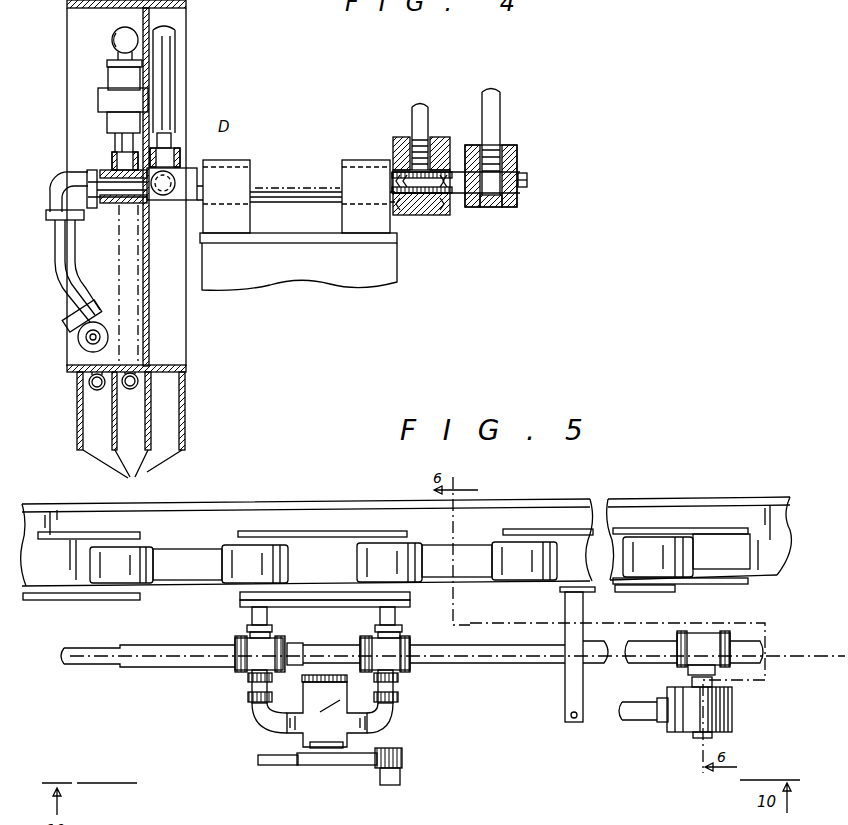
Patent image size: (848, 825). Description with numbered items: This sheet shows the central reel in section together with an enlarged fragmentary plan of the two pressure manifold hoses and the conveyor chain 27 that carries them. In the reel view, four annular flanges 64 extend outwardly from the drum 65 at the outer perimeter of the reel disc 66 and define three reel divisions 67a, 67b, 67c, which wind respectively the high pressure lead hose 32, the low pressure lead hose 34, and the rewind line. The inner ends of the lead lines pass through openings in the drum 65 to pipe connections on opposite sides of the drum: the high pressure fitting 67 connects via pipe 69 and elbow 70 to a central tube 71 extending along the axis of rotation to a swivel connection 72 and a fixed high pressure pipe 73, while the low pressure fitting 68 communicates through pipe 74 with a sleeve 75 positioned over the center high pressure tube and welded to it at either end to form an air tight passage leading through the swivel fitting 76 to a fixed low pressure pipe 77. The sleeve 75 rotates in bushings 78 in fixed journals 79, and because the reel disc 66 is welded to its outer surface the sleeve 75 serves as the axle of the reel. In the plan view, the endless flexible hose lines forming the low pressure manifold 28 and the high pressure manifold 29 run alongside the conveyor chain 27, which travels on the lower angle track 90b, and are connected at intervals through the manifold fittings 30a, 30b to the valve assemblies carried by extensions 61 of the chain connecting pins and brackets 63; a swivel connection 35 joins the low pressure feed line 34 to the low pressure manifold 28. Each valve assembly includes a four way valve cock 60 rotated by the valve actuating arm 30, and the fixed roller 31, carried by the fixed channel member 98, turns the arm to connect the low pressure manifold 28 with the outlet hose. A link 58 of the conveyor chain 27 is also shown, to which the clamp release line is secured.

In FIG. 4, the low pressure fitting 68 is at (111, 43).
In FIG. 4, the pipe 74 is at (115, 160).
In FIG. 4, the central tube 71 is at (100, 182).
In FIG. 4, the elbow 70 is at (55, 196).
In FIG. 4, the sleeve 75 is at (115, 206).
In FIG. 4, the pipe 69 is at (62, 273).
In FIG. 4, the high pressure fitting 67 is at (79, 338).
In FIG. 4, the reel disc 66 is at (150, 318).
In FIG. 4, the drum 65 is at (183, 364).
In FIG. 4, the low pressure feed line 34 is at (160, 394).
In FIG. 5, the low pressure feed line 34 is at (640, 708).
In FIG. 4, the high pressure feed line 32 is at (88, 383).
In FIG. 4, the reel division 67a is at (93, 411).
In FIG. 4, the reel division 67b is at (126, 411).
In FIG. 4, the reel division 67c is at (167, 355).
In FIG. 4, the annular flanges 64 is at (132, 473).
In FIG. 4, the bushings 78 is at (250, 165).
In FIG. 4, the fixed journals 79 is at (352, 212).
In FIG. 4, the fixed low pressure pipe 77 is at (415, 106).
In FIG. 4, the swivel fitting 76 is at (428, 152).
In FIG. 4, the fixed high pressure pipe 73 is at (499, 106).
In FIG. 4, the swivel connection 72 is at (517, 167).
In FIG. 5, the lower angle track 90b is at (753, 500).
In FIG. 5, the conveyor chain 27 is at (508, 567).
In FIG. 5, the extensions 61 is at (342, 622).
In FIG. 5, the brackets 63 is at (398, 606).
In FIG. 5, the low pressure manifold 28 is at (107, 662).
In FIG. 5, the high pressure manifold 29 is at (203, 660).
In FIG. 5, the fittings 30a is at (255, 665).
In FIG. 5, the tee fitting 30b is at (403, 668).
In FIG. 5, the four way valve cock 60 is at (292, 732).
In FIG. 5, the valve actuating arm 30 is at (322, 764).
In FIG. 5, the fixed roller 31 is at (402, 756).
In FIG. 5, the fixed channel member 98 is at (400, 774).
In FIG. 5, the link 58 is at (585, 612).
In FIG. 5, the swivel connection 35 is at (693, 718).